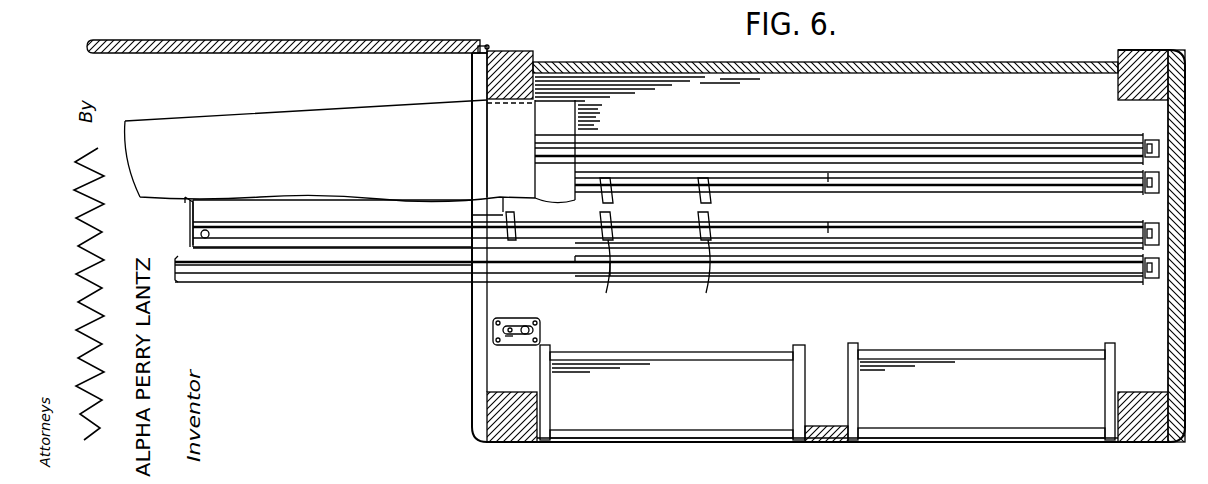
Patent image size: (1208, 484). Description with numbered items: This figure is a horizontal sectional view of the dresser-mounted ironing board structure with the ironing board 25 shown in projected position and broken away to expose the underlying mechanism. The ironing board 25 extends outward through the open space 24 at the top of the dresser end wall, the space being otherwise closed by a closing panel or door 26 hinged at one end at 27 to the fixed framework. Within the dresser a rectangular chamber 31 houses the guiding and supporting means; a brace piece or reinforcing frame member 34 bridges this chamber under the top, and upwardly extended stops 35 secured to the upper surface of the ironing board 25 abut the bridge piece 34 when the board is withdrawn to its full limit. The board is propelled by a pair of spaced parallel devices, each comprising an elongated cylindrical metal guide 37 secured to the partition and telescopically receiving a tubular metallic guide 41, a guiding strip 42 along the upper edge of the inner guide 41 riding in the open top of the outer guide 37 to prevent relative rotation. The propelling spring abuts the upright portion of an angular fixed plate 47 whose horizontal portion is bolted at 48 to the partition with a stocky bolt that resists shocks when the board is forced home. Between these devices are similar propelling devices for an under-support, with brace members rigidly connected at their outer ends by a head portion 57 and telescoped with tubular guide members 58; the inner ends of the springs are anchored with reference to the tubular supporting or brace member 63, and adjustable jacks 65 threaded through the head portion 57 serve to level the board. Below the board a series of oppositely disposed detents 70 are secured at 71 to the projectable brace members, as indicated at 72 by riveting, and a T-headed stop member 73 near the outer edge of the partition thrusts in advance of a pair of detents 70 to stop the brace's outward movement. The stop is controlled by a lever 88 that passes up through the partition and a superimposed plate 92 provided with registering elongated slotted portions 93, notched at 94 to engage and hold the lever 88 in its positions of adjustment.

The space 24 is at (476, 311).
The ironing board 25 is at (350, 151).
The closing panel or door 26 is at (264, 38).
The hinge 27 is at (487, 47).
The chamber 31 is at (818, 273).
The brace piece or reinforcing frame member 34 is at (531, 150).
The stops 35 is at (580, 123).
The cylindrical metal guide 37 is at (994, 136).
The tubular metallic guide 41 is at (358, 275).
The guiding strip 42 is at (410, 269).
The angular fixed plate 47 is at (1143, 138).
The bolt 48 is at (1151, 288).
The head portion 57 is at (186, 201).
The tubular guide member 58 is at (845, 229).
The tubular supporting or brace member 63 is at (293, 232).
The adjustable jack 65 is at (196, 232).
The detent 70 is at (612, 199).
The securing point 71 is at (716, 277).
The rivet fastening 72 is at (616, 277).
The T-headed stop member 73 is at (500, 215).
The lever 88 is at (541, 327).
The superimposed plate 92 is at (540, 320).
The slotted portions 93 is at (500, 332).
The notches 94 is at (503, 342).